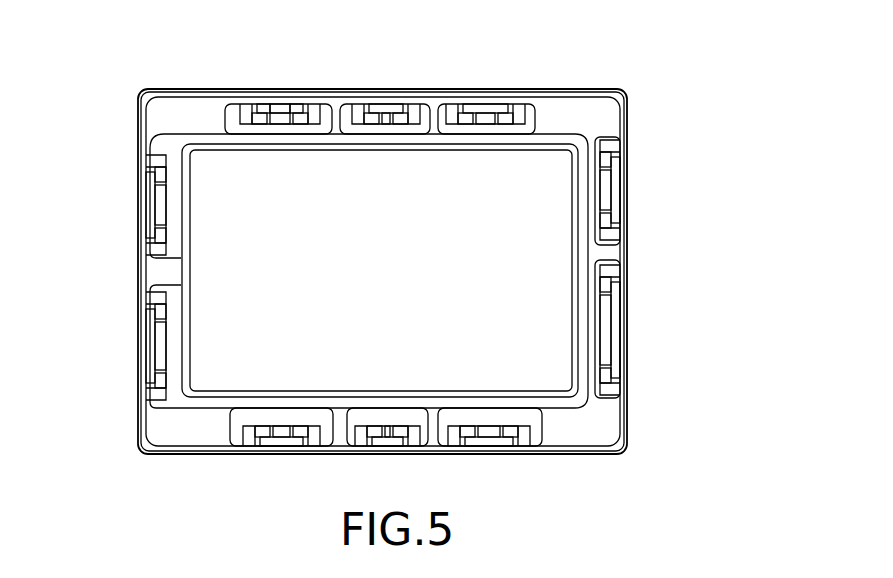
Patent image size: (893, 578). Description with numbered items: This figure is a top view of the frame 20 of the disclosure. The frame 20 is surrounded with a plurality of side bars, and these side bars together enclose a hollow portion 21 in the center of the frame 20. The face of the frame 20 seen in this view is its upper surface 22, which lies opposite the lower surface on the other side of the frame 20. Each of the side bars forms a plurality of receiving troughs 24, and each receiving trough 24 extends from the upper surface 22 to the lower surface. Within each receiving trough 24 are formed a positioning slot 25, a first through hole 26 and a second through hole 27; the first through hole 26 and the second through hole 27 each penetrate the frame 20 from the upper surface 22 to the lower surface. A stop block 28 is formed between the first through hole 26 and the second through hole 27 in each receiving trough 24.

The frame 20 is at (592, 82).
The hollow portion 21 is at (215, 282).
The upper surface 22 is at (628, 415).
The receiving trough 24 is at (252, 108).
The positioning slot 25 is at (258, 118).
The first through hole 26 is at (268, 104).
The second through hole 27 is at (300, 104).
The stop block 28 is at (285, 105).